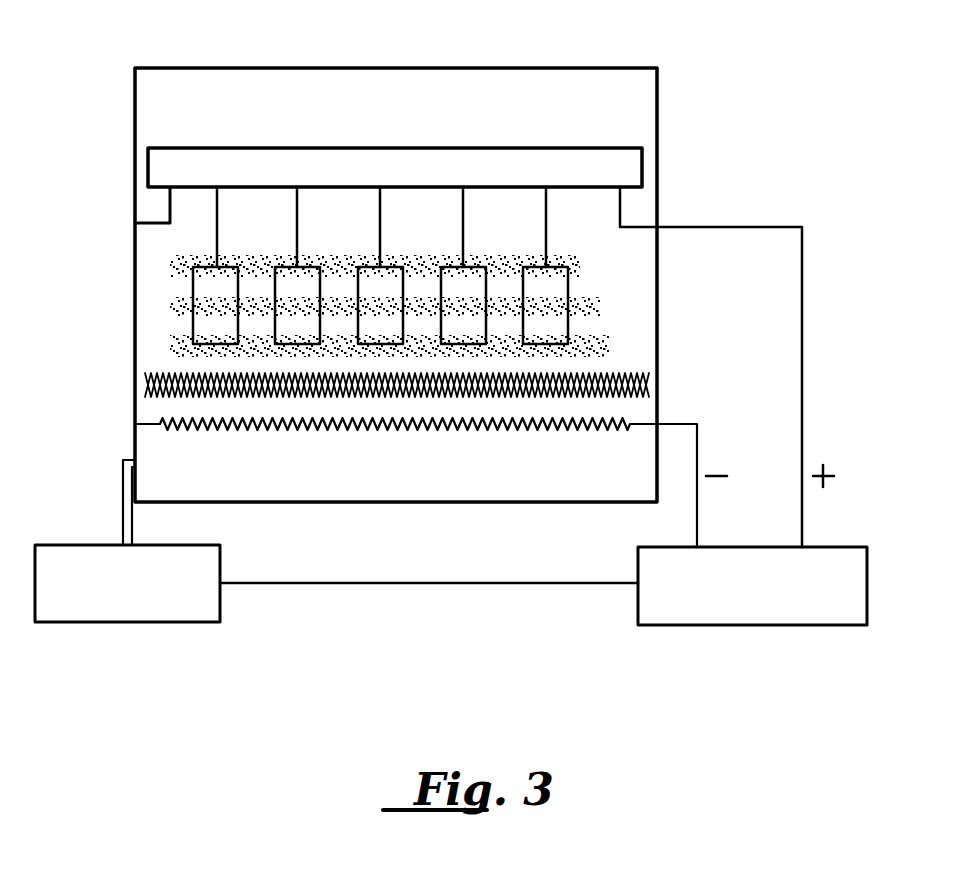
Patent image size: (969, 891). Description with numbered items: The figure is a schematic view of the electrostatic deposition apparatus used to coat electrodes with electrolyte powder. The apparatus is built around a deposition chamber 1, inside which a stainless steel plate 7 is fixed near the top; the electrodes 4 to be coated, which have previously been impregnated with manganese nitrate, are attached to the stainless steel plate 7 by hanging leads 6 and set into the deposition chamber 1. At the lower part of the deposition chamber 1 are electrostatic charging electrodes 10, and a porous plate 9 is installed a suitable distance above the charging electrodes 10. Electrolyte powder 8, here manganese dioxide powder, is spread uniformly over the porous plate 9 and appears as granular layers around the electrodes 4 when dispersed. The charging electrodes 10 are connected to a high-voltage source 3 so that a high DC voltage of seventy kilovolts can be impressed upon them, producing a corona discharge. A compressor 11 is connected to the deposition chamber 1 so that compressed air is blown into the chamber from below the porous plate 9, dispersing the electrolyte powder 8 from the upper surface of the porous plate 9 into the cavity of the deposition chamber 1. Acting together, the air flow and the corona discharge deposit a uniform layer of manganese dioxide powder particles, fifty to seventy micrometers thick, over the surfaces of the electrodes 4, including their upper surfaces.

The deposition chamber 1 is at (607, 68).
The high-voltage source 3 is at (680, 610).
The electrodes 4 is at (193, 287).
The lead wires 6 is at (217, 229).
The stainless steel plate 7 is at (420, 148).
The electrolyte powder 8 is at (590, 314).
The porous plate 9 is at (627, 381).
The electrostatic charging electrodes 10 is at (300, 428).
The compressor 11 is at (178, 605).